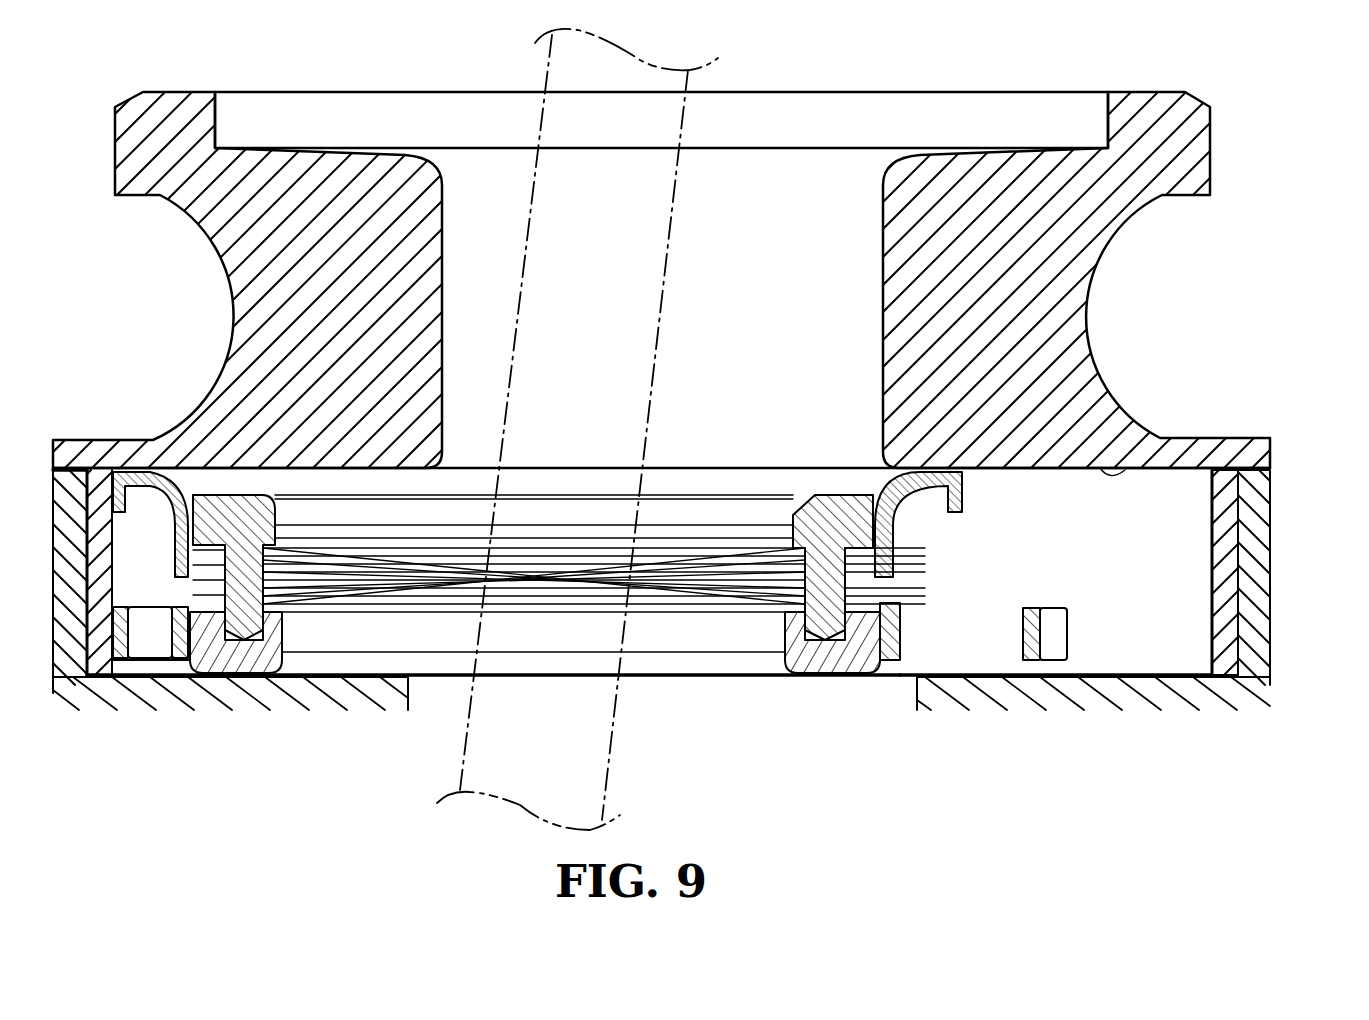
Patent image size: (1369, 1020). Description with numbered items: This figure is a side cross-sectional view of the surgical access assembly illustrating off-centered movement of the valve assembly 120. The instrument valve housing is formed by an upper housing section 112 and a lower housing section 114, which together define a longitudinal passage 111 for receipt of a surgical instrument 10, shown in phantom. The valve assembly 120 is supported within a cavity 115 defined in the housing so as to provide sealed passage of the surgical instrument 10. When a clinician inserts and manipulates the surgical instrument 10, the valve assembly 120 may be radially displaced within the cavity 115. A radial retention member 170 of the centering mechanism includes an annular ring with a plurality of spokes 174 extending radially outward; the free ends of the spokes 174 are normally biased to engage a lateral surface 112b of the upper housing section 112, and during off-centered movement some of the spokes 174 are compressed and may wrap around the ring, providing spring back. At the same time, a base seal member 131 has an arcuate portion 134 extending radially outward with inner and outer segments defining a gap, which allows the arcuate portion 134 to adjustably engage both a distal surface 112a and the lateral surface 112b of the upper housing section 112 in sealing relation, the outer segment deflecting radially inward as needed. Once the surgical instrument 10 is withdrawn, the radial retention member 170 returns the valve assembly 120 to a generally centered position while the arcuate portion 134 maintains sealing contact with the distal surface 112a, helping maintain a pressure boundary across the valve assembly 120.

The surgical instrument 10 is at (545, 70).
The longitudinal passage 111 is at (768, 182).
The upper housing section 112 is at (1085, 265).
The distal surface 112a is at (1130, 468).
The lateral surface 112b is at (1200, 575).
The lower housing section 114 is at (1255, 682).
The cavity 115 is at (1127, 640).
The valve assembly 120 is at (942, 566).
The base seal member 131 is at (125, 467).
The arcuate portion 134 is at (115, 468).
The radial retention member 170 is at (178, 634).
The spokes 174 is at (150, 640).